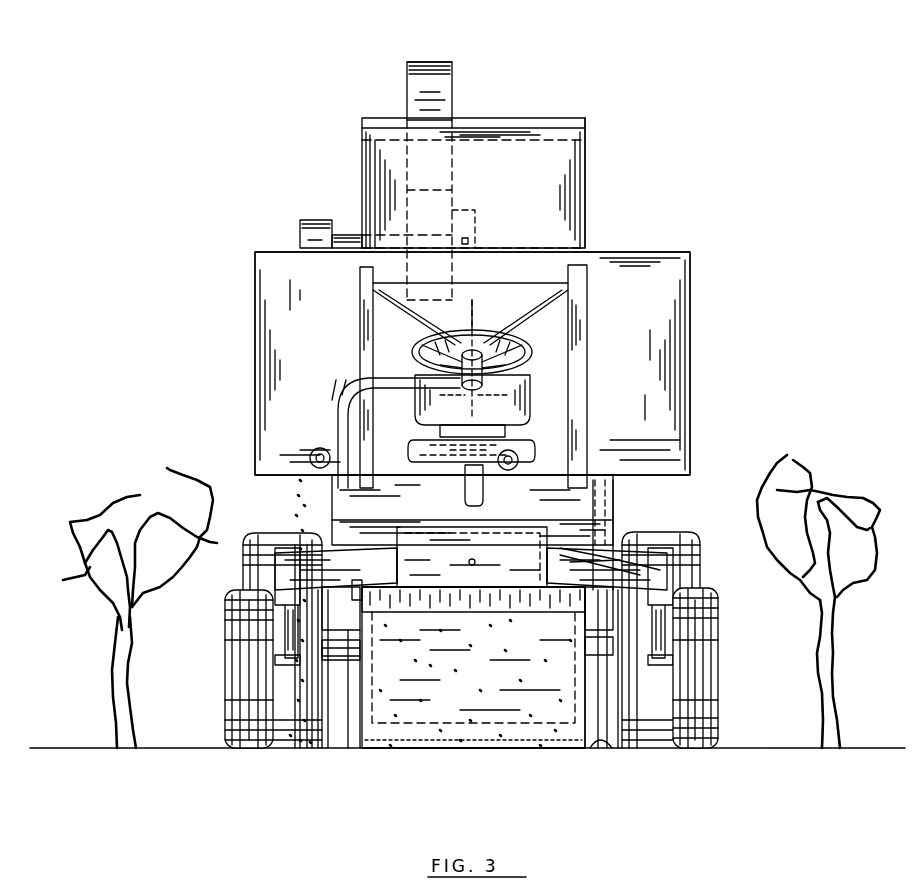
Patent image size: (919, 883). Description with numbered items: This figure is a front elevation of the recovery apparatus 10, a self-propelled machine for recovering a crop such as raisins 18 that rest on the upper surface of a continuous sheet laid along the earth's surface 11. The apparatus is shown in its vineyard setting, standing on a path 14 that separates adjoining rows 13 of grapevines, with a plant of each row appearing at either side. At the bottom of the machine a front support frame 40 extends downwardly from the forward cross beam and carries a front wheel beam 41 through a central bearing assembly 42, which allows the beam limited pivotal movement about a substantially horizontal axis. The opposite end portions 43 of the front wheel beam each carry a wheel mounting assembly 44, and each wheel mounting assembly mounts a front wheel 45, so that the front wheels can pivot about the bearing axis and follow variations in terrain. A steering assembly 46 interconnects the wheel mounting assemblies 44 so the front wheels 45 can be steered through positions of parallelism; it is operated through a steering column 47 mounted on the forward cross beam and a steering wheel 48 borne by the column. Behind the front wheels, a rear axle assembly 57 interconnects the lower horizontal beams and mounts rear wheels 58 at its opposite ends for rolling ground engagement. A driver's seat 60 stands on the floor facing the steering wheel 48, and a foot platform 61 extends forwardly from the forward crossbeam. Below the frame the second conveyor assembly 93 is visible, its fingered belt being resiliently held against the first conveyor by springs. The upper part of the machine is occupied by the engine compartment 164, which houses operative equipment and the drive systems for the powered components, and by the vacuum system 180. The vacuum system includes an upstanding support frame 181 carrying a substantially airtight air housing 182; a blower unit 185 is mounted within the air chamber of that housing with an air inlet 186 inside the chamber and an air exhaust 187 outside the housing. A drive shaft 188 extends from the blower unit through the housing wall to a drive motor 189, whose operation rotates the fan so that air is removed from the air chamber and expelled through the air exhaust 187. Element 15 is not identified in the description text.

The recovery apparatus 10 is at (610, 215).
The earth's surface 11 is at (96, 747).
The rows 13 is at (112, 497).
The path 14 is at (606, 750).
The hopper bottom 15 is at (366, 750).
The raisins 18 is at (458, 690).
The front support frame 40 is at (541, 585).
The front wheel beam 41 is at (668, 565).
The central bearing assembly 42 is at (455, 555).
The opposite end portions 43 is at (275, 574).
The wheel mounting assemblies 44 is at (284, 620).
The front wheels 45 is at (227, 680).
The steering assembly 46 is at (375, 545).
The steering column 47 is at (350, 395).
The steering wheel 48 is at (531, 350).
The rear axle assembly 57 is at (341, 640).
The rear wheels 58 is at (258, 533).
The driver's seat 60 is at (532, 385).
The foot platform 61 is at (578, 522).
The second conveyor assembly 93 is at (535, 620).
The engine compartment 164 is at (472, 363).
The vacuum system 180 is at (506, 152).
The support frame 181 is at (360, 324).
The air housing 182 is at (585, 158).
The blower unit 185 is at (440, 82).
The air inlet 186 is at (478, 228).
The air exhaust 187 is at (427, 62).
The drive shaft 188 is at (352, 236).
The drive motor 189 is at (310, 238).